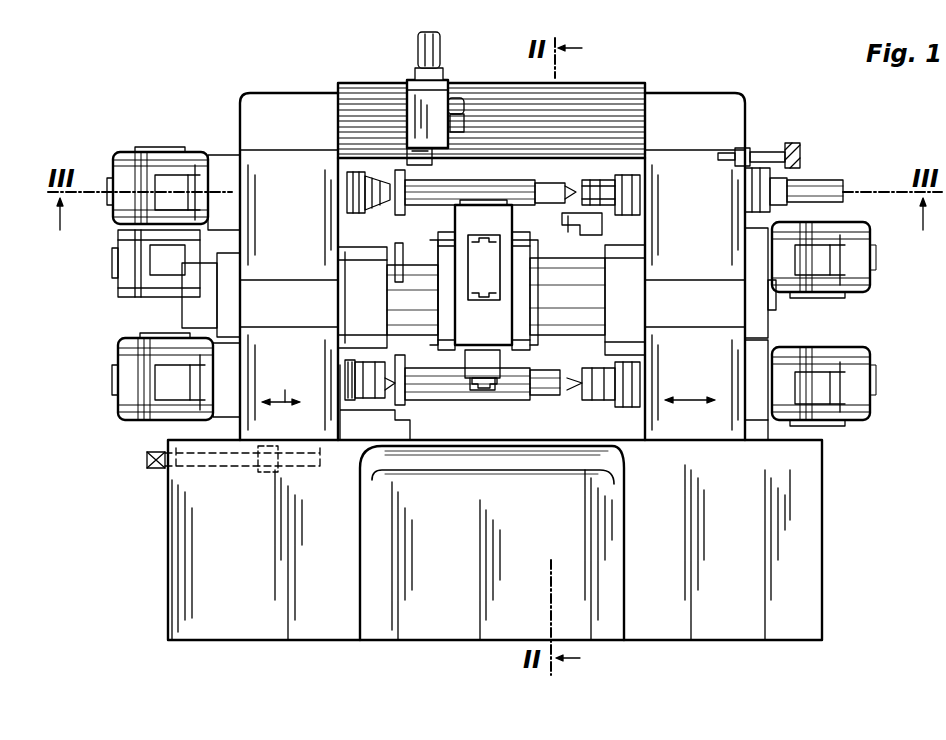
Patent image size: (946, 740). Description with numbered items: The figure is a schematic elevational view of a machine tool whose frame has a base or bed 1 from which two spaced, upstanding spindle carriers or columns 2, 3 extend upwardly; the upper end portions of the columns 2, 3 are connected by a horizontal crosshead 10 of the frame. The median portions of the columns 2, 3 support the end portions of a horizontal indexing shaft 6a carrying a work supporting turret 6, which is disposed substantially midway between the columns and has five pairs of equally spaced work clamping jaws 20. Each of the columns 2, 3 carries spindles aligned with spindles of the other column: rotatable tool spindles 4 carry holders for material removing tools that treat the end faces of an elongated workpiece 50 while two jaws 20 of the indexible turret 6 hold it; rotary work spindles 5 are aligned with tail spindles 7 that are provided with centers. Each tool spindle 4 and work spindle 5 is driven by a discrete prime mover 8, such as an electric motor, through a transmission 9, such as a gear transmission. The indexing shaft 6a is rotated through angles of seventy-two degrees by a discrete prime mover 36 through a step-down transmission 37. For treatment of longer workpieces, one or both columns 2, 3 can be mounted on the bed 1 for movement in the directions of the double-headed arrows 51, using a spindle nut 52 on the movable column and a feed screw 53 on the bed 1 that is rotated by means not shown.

The bed 1 is at (808, 558).
The column 2 is at (698, 362).
The column 3 is at (294, 334).
The tool spindle 4 is at (352, 398).
The work spindle 5 is at (348, 188).
The work supporting turret 6 is at (505, 252).
The indexing shaft 6a is at (595, 318).
The tail spindle 7 is at (600, 182).
The prime mover 8 is at (126, 160).
The transmission 9 is at (222, 160).
The crosshead 10 is at (608, 104).
The work clamping jaws 20 is at (488, 246).
The prime mover 36 is at (858, 282).
The step-down transmission 37 is at (760, 328).
The workpiece 50 is at (548, 392).
The double-headed arrows 51 is at (690, 402).
The spindle nut 52 is at (271, 472).
The feed screw 53 is at (218, 466).